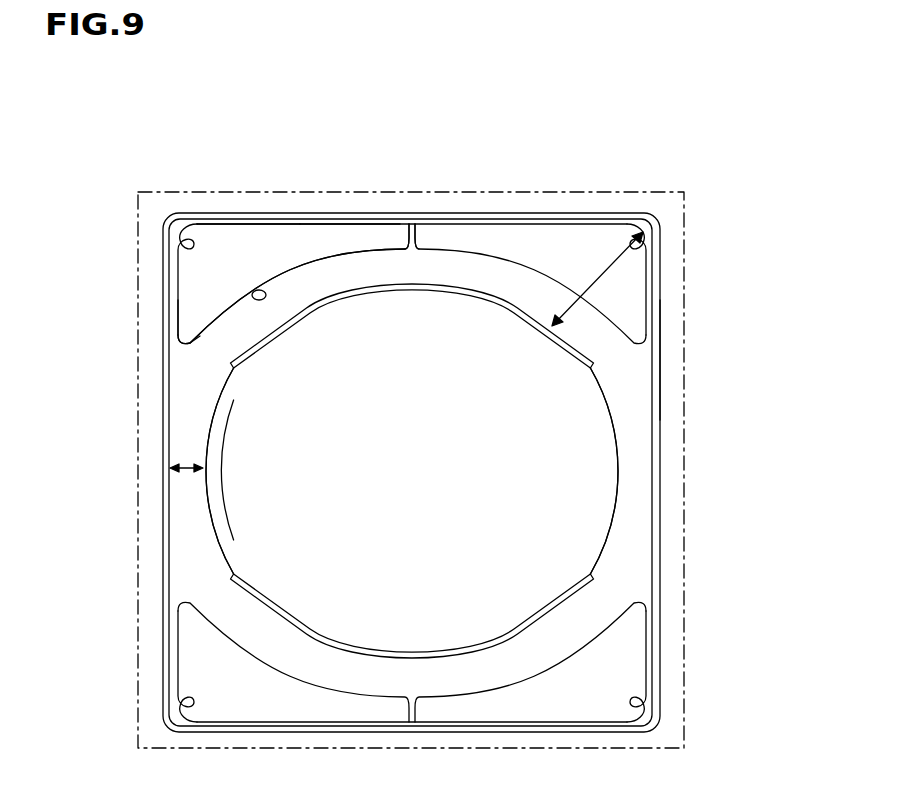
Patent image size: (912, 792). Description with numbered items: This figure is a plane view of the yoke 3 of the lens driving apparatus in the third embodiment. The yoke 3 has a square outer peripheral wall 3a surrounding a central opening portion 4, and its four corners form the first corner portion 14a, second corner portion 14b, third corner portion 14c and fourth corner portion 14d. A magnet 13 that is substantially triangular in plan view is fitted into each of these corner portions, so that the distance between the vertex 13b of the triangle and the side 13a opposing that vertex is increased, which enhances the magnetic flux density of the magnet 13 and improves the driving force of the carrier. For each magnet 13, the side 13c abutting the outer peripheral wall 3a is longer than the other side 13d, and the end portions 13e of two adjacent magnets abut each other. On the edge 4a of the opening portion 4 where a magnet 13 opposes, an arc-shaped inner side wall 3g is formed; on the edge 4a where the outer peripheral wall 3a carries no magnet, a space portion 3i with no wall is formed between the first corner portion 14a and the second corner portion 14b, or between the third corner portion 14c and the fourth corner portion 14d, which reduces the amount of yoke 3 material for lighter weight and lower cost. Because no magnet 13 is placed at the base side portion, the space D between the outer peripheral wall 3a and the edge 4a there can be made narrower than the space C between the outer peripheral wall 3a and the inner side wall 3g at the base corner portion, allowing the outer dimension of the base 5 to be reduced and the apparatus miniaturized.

The yoke 3 is at (649, 165).
The outer peripheral wall 3a is at (662, 360).
The inner side wall 3g is at (401, 292).
The space portion 3i is at (212, 466).
The opening portion 4 is at (572, 530).
The edge of the opening portion 4a is at (212, 420).
The base 5 is at (690, 217).
The magnet 13 is at (246, 240).
The side of the magnet opposing the vertex 13a is at (253, 297).
The vertex of the magnet 13b is at (200, 236).
The one side of the magnet abutting the outer peripheral wall 13c is at (323, 223).
The other side of the magnet 13d is at (176, 316).
The end portion of the magnet 13e is at (398, 238).
The first corner portion 14a is at (612, 230).
The second corner portion 14b is at (640, 702).
The third corner portion 14c is at (183, 705).
The fourth corner portion 14d is at (178, 248).
The space between the outer peripheral wall and the inner side wall C is at (600, 278).
The space between the outer peripheral wall and the edge of the opening portion D is at (186, 470).